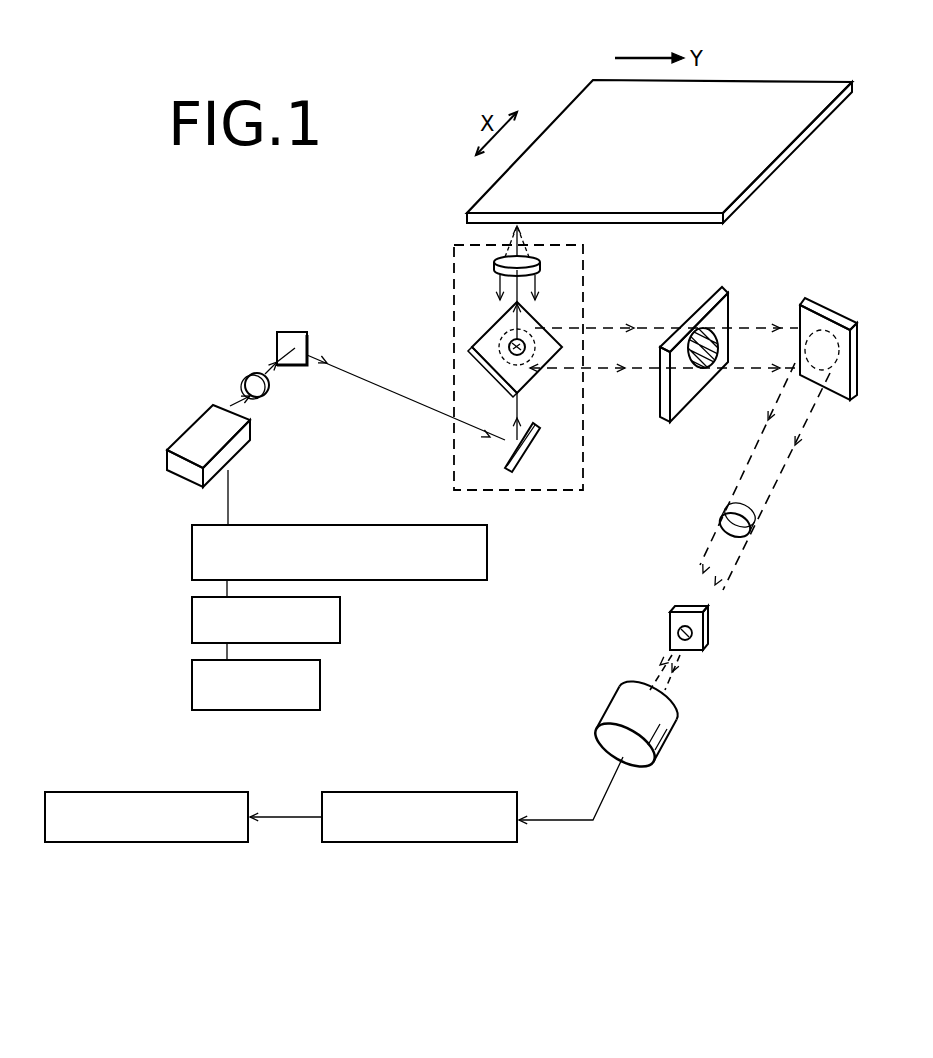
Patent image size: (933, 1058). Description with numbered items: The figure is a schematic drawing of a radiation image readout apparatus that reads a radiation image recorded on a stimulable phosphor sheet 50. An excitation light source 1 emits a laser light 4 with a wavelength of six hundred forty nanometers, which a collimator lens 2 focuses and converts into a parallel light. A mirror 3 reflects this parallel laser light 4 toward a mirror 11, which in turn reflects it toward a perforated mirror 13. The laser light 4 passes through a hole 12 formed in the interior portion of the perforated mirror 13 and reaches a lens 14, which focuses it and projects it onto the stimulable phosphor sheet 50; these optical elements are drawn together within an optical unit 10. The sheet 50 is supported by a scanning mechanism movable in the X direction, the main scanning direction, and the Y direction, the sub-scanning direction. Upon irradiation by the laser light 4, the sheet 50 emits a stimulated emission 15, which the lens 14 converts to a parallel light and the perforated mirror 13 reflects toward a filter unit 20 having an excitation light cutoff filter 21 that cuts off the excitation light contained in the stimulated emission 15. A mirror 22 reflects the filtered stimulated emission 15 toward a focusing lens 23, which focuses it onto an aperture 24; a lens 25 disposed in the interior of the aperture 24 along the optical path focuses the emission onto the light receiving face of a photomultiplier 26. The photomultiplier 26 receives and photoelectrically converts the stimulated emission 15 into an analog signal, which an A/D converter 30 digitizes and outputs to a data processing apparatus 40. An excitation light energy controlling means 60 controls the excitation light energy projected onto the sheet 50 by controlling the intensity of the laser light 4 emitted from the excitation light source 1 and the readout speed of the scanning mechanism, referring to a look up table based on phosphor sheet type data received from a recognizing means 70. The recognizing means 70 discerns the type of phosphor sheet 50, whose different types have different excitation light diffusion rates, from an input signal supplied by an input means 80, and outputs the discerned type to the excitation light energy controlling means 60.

The excitation light source 1 is at (185, 437).
The collimator lens 2 is at (247, 372).
The mirror 3 is at (287, 337).
The laser light 4 is at (313, 356).
The optical head 10 is at (557, 492).
The mirror 11 is at (535, 455).
The hole 12 is at (510, 352).
The perforated mirror 13 is at (535, 380).
The lens 14 is at (497, 265).
The stimulated emission 15 is at (648, 320).
The filter unit 20 is at (732, 305).
The excitation light cutoff filter 21 is at (718, 368).
The mirror 22 is at (866, 325).
The focusing lens 23 is at (756, 540).
The aperture 24 is at (672, 615).
The lens 25 is at (677, 634).
The photomultiplier 26 is at (605, 692).
The A/D converter 30 is at (489, 790).
The data processing apparatus 40 is at (224, 790).
The stimulable phosphor sheet 50 is at (825, 80).
The excitation light energy controlling means 60 is at (448, 583).
The recognizing means 70 is at (342, 633).
The input means 80 is at (322, 688).